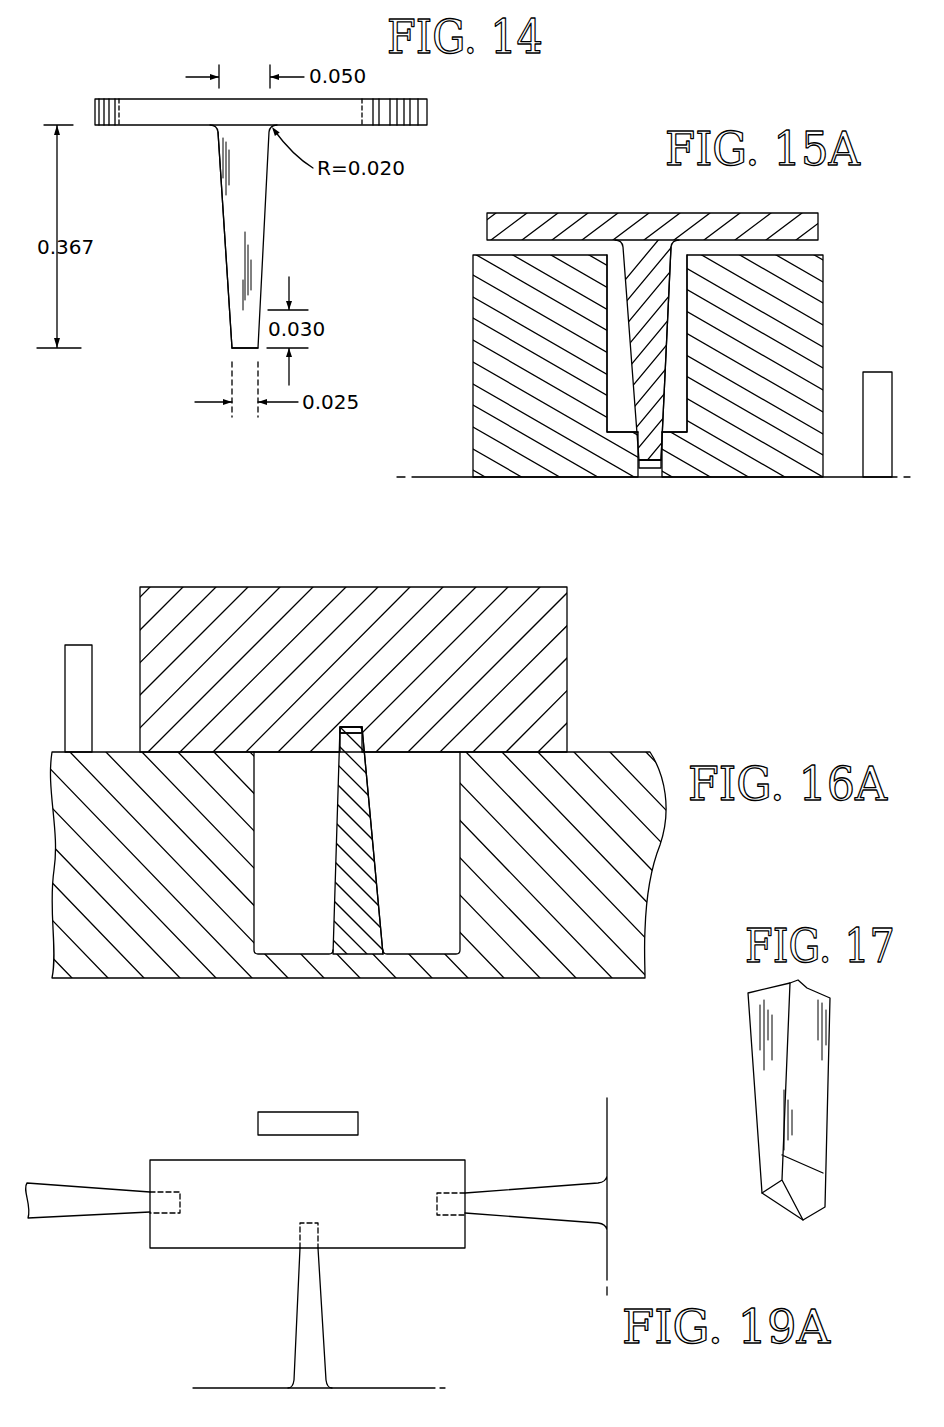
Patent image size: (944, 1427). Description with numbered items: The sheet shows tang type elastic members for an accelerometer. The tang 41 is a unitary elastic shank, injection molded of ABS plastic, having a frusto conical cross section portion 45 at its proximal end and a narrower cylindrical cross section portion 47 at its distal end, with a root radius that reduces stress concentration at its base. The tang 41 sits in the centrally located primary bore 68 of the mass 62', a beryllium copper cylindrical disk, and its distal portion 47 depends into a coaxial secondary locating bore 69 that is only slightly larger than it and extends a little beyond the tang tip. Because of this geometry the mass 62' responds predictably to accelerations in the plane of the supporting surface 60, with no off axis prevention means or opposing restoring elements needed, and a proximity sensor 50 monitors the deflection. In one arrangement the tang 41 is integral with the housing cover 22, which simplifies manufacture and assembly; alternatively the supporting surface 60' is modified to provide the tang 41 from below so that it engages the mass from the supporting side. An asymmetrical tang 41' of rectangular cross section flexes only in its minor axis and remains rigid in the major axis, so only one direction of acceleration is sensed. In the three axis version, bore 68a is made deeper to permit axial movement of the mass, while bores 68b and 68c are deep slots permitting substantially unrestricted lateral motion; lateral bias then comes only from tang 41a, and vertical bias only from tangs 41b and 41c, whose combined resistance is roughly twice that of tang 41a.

In FIG. 15A, the housing cover 22 is at (797, 222).
In FIG. 14, the tang 41 is at (272, 236).
In FIG. 15A, the tang 41 is at (650, 376).
In FIG. 16A, the tang 41 is at (353, 840).
In FIG. 17, the tang 41' is at (818, 1100).
In FIG. 19A, the tang 41a is at (320, 1328).
In FIG. 19A, the tang 41b is at (75, 1195).
In FIG. 19A, the tang 41c is at (553, 1197).
In FIG. 14, the frusto conical cross section portion 45 is at (233, 193).
In FIG. 15A, the frusto conical cross section portion 45 is at (662, 262).
In FIG. 16A, the frusto conical cross section portion 45 is at (363, 897).
In FIG. 14, the cylindrical cross section portion 47 is at (238, 328).
In FIG. 15A, the cylindrical cross section portion 47 is at (667, 457).
In FIG. 16A, the cylindrical cross section portion 47 is at (355, 752).
In FIG. 15A, the proximity sensor 50 is at (878, 380).
In FIG. 16A, the proximity sensor 50 is at (78, 653).
In FIG. 19A, the proximity sensor 50 is at (327, 1118).
In FIG. 15A, the supporting surface 60 is at (653, 495).
In FIG. 16A, the supporting surface 60' is at (432, 844).
In FIG. 15A, the mass 62' is at (617, 354).
In FIG. 16A, the mass 62' is at (351, 669).
In FIG. 15A, the primary bore 68 is at (682, 347).
In FIG. 19A, the bore 68a is at (318, 1223).
In FIG. 19A, the bore 68b is at (172, 1213).
In FIG. 19A, the bore 68c is at (450, 1217).
In FIG. 15A, the secondary locating bore 69 is at (647, 470).
In FIG. 16A, the secondary locating bore 69 is at (333, 722).